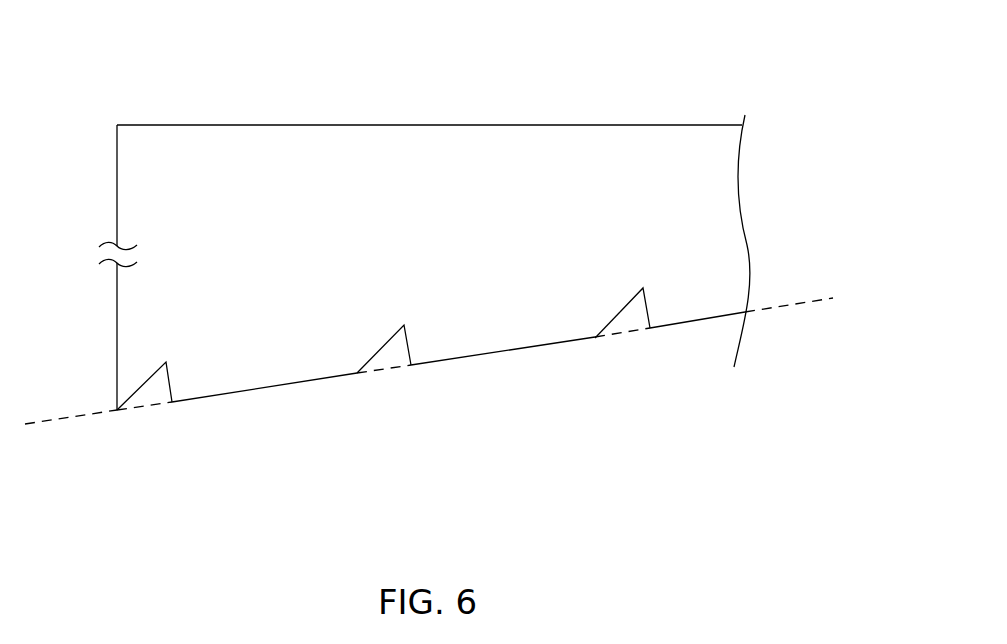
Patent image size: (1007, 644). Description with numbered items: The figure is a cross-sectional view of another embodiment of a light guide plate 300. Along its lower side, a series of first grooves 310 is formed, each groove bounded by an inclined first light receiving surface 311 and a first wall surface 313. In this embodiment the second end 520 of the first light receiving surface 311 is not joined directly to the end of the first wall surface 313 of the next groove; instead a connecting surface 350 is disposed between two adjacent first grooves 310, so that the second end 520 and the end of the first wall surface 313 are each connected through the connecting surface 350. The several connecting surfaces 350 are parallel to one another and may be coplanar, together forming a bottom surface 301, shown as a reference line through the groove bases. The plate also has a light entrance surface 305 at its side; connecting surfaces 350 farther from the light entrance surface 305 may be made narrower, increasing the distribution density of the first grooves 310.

The light guide structure 300 is at (133, 33).
The light entrance surface 305 is at (117, 167).
The bottom surface 301 is at (453, 356).
The connecting surface 350 is at (487, 356).
The first groove 310 is at (390, 357).
The first wall surface 313 is at (403, 367).
The second end 520 is at (595, 338).
The first light receiving surface 311 is at (613, 321).